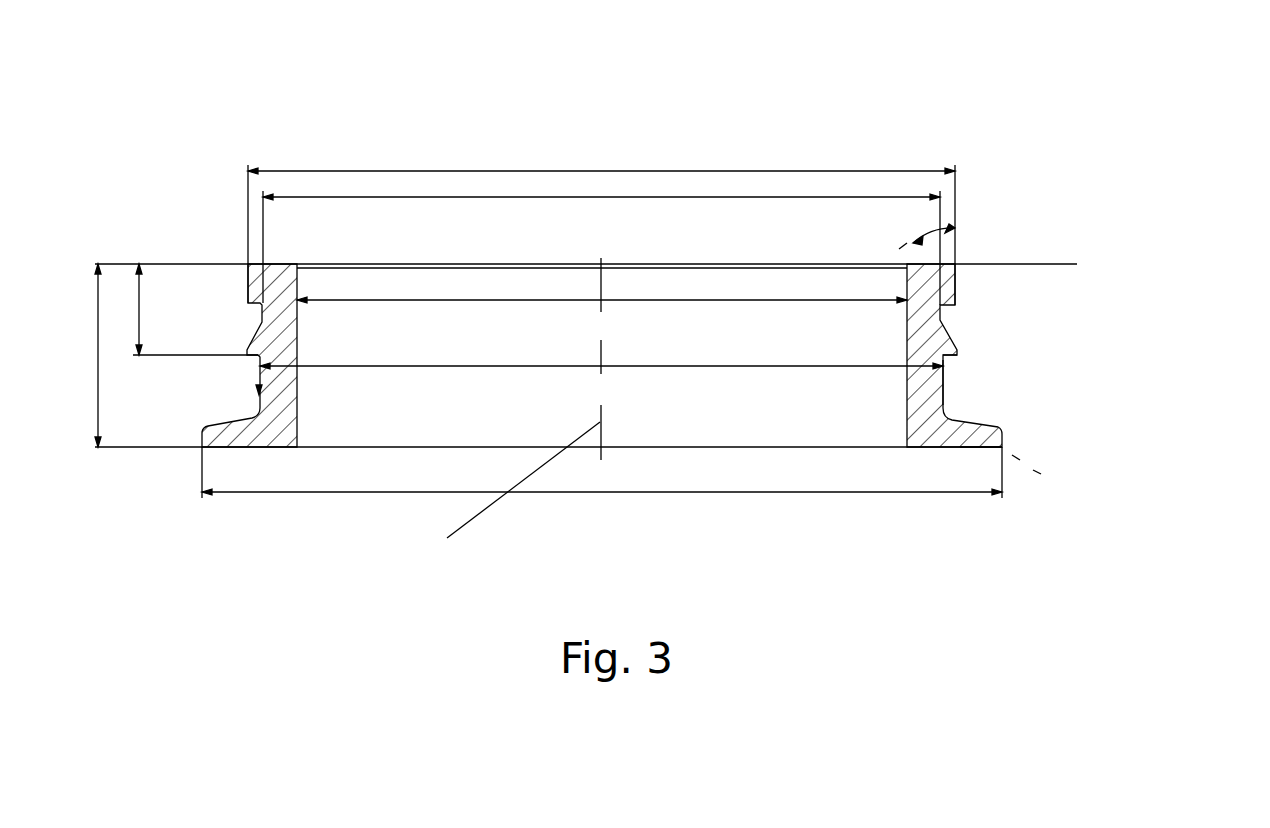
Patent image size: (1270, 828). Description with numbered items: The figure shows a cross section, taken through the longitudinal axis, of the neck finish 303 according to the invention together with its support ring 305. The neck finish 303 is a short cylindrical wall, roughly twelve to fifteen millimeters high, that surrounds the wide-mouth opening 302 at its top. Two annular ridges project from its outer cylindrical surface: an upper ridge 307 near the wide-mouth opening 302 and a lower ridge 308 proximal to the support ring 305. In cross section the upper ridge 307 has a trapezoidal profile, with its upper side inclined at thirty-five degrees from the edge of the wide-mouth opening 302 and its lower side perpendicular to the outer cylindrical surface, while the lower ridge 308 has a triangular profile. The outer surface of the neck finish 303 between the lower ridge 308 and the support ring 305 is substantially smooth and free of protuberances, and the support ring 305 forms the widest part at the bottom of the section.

The wide-mouth opening 302 is at (420, 262).
The neck finish 303 is at (1030, 394).
The support ring 305 is at (992, 445).
The upper ridge 307 is at (943, 292).
The lower ridge 308 is at (958, 354).